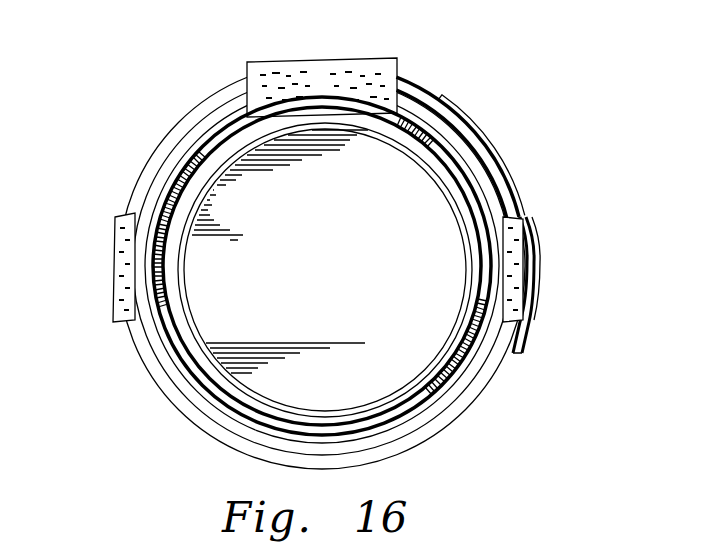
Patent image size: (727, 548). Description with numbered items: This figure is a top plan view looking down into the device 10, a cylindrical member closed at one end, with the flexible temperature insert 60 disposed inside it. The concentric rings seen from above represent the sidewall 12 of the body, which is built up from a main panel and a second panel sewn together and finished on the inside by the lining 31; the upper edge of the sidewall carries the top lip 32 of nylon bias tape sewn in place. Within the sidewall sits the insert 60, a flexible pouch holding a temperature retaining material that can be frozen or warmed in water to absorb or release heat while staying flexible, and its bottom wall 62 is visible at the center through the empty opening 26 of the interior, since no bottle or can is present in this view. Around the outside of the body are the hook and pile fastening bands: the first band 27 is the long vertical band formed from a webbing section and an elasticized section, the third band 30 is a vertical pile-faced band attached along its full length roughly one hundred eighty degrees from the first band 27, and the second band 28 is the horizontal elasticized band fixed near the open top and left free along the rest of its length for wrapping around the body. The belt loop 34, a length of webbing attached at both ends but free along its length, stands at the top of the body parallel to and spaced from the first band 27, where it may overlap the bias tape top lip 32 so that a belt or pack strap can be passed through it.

The device 10 is at (178, 98).
The sidewall 12 is at (480, 173).
The opening 26 is at (287, 422).
The first band 27 is at (118, 250).
The second band 28 is at (425, 80).
The third band 30 is at (532, 240).
The lining 31 is at (198, 163).
The top lip 32 is at (140, 367).
The belt loop 34 is at (345, 64).
The flexible insert 60 is at (480, 194).
The bottom wall 62 is at (354, 252).